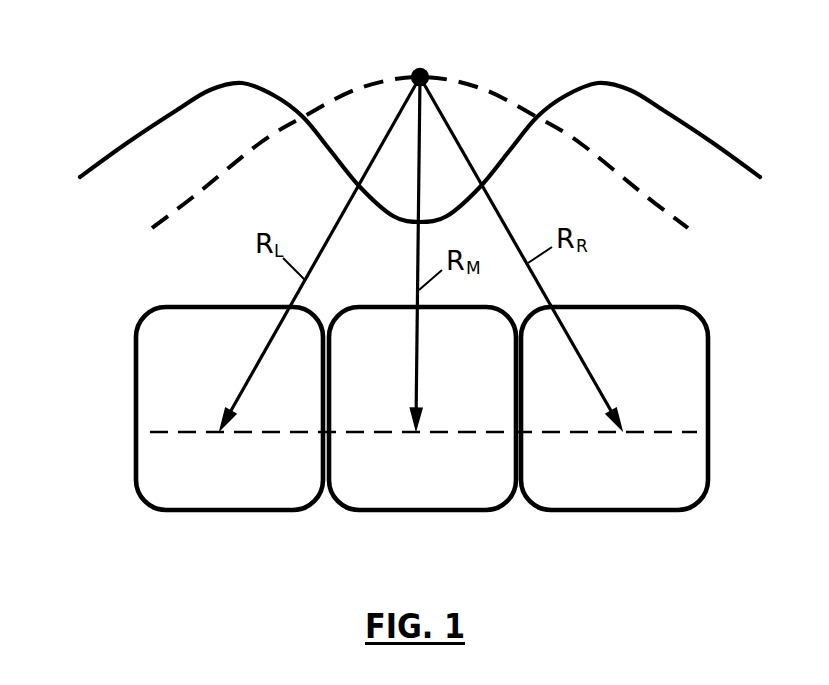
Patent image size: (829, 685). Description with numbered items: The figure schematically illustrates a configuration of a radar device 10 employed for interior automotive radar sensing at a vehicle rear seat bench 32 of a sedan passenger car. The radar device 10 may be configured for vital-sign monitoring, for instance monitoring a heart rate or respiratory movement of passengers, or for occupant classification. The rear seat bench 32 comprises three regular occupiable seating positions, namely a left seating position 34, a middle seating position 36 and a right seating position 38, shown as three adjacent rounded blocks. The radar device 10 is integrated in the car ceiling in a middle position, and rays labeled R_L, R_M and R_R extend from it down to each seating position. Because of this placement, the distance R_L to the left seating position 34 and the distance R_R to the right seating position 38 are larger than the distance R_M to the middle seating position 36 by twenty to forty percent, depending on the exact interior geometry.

The radar device 10 is at (404, 57).
The vehicle rear seat bench 32 is at (106, 285).
The left seating position 34 is at (240, 379).
The middle seating position 36 is at (403, 379).
The right seating position 38 is at (633, 379).